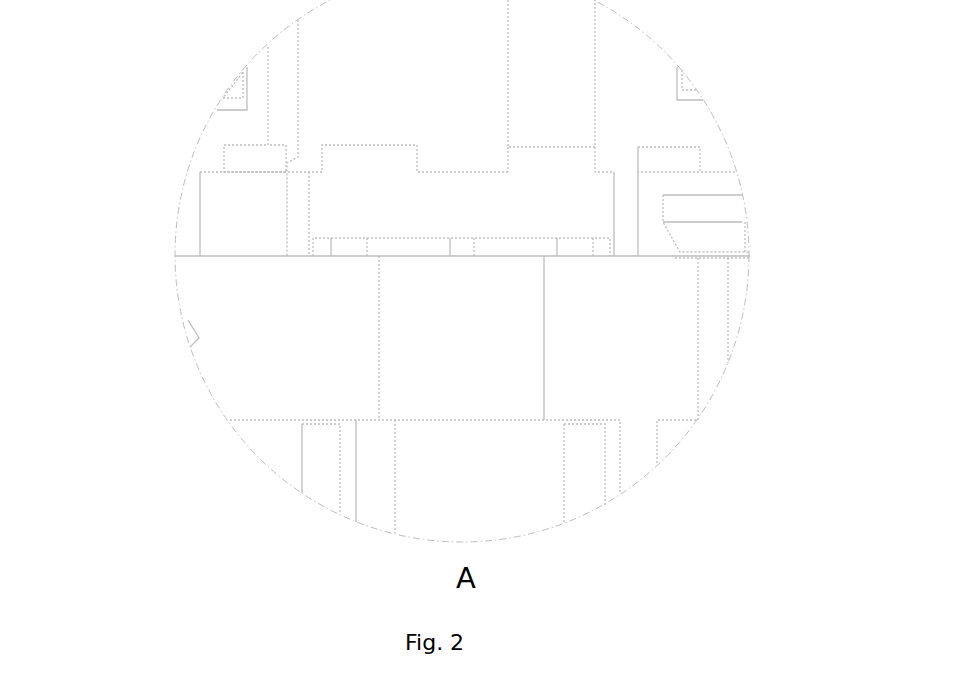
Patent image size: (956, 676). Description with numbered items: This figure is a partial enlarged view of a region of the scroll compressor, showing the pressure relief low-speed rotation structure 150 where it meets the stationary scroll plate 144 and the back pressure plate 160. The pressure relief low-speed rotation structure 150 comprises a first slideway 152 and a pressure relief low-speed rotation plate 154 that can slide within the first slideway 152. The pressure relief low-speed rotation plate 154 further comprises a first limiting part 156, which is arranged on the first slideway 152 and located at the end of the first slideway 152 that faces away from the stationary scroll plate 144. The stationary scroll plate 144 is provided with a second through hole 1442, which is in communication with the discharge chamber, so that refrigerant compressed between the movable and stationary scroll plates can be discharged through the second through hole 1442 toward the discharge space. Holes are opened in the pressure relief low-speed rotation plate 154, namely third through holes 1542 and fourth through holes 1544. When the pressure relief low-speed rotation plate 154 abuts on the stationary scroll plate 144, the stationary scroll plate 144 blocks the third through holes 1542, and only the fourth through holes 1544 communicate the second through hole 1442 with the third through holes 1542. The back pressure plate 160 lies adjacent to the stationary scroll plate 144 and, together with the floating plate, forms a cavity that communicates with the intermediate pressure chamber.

The pressure relief low-speed rotation structure 150 is at (435, 195).
The first slideway 152 is at (350, 193).
The pressure relief low-speed rotation plate 154 is at (469, 304).
The first limiting part 156 is at (437, 172).
The third through hole 1542 is at (580, 250).
The fourth through hole 1544 is at (458, 248).
The stationary scroll plate 144 is at (418, 394).
The second through hole 1442 is at (433, 365).
The back pressure plate 160 is at (636, 108).